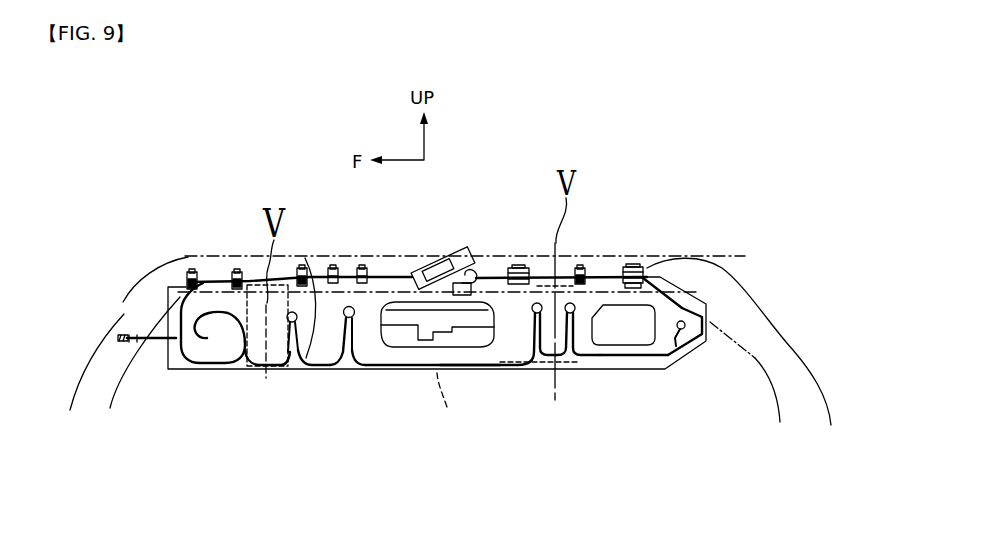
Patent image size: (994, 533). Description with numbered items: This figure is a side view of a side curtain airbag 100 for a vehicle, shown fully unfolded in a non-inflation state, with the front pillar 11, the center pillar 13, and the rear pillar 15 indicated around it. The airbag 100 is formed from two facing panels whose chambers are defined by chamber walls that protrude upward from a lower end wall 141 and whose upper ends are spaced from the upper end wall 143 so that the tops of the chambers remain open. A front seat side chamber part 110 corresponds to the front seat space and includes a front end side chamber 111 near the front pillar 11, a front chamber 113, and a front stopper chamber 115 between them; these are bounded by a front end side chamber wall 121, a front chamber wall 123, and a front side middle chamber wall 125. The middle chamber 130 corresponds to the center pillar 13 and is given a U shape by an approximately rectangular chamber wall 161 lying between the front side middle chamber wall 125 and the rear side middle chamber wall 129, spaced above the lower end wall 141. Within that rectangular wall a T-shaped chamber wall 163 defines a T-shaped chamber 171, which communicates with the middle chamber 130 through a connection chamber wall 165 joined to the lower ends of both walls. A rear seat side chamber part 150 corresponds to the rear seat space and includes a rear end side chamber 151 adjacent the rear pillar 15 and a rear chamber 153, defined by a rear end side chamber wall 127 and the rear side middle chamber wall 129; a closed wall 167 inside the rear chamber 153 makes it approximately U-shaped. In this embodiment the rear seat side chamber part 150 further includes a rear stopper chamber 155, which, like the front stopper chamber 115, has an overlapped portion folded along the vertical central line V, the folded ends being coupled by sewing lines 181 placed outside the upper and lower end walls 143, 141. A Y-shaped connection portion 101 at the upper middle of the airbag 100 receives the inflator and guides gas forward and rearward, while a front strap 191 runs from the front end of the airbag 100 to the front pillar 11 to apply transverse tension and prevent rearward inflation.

The airbag 100 is at (528, 222).
The connection portion 101 is at (470, 264).
The front pillar 11 is at (125, 325).
The center pillar 13 is at (448, 410).
The rear pillar 15 is at (745, 308).
The front seat side chamber part 110 is at (246, 392).
The front end side chamber 111 is at (209, 358).
The front chamber 113 is at (302, 381).
The front stopper chamber 115 is at (268, 366).
The front end side chamber wall 121 is at (190, 272).
The front chamber wall 123 is at (317, 281).
The front side middle chamber wall 125 is at (331, 270).
The rear end side chamber wall 127 is at (661, 292).
The rear side middle chamber wall 129 is at (540, 357).
The middle chamber 130 is at (372, 362).
The lower end wall 141 is at (464, 364).
The upper end wall 143 is at (600, 277).
The rear seat side chamber part 150 is at (645, 386).
The rear end side chamber 151 is at (688, 338).
The rear chamber 153 is at (606, 357).
The rear stopper chamber 155 is at (570, 352).
The rectangular chamber wall 161 is at (500, 322).
The T-shaped chamber wall 163 is at (450, 256).
The connection chamber wall 165 is at (428, 314).
The closed wall 167 is at (617, 292).
The T-shaped chamber 171 is at (440, 322).
The sewing line 181 is at (257, 279).
The front strap 191 is at (152, 348).